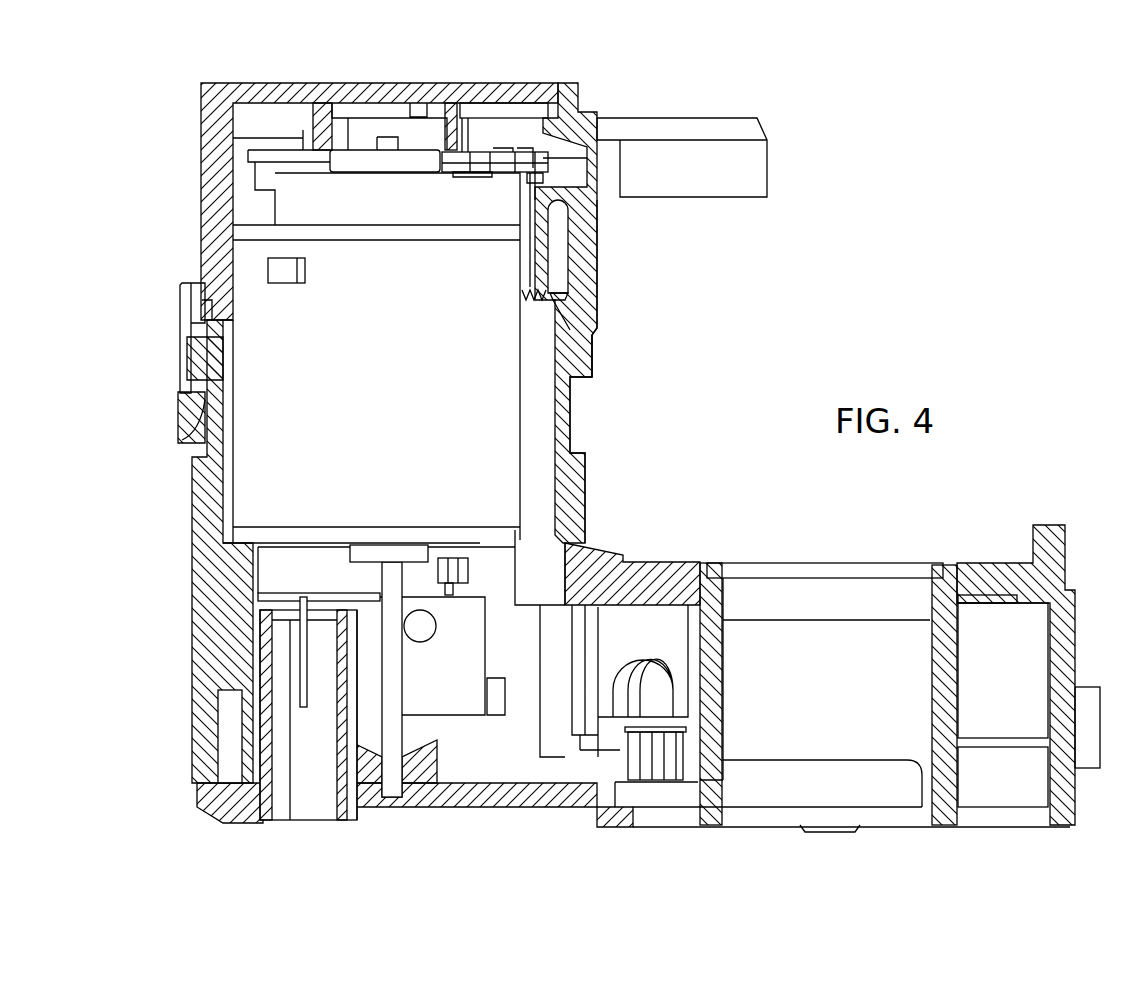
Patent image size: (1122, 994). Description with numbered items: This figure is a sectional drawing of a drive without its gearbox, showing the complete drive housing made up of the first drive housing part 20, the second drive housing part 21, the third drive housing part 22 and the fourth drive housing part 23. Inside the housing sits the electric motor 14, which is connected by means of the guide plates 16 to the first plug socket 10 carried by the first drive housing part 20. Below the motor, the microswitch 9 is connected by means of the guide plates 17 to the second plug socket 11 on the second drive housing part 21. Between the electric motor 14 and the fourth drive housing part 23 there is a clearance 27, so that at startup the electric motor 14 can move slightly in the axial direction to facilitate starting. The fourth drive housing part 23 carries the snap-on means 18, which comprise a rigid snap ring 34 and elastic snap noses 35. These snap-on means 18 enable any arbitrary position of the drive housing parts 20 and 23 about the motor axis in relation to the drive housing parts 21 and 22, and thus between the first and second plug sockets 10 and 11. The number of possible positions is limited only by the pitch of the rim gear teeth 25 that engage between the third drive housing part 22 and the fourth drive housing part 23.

The microswitch 9 is at (455, 681).
The first plug socket 10 is at (686, 128).
The second plug socket 11 is at (302, 792).
The electric motor 14 is at (487, 560).
The guide plates 16 is at (277, 152).
The guide plates 17 is at (333, 597).
The snap-on means 18 is at (180, 300).
The first drive housing part 20 is at (618, 262).
The second drive housing part 21 is at (710, 833).
The third drive housing part 22 is at (584, 433).
The fourth drive housing part 23 is at (320, 76).
The rim gear teeth 25 is at (540, 302).
The clearance 27 is at (428, 130).
The rigid snap ring 34 is at (595, 378).
The elastic snap noses 35 is at (195, 430).